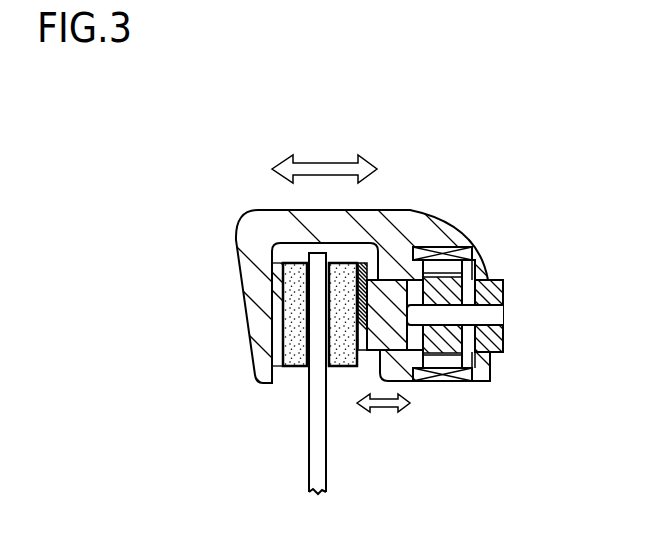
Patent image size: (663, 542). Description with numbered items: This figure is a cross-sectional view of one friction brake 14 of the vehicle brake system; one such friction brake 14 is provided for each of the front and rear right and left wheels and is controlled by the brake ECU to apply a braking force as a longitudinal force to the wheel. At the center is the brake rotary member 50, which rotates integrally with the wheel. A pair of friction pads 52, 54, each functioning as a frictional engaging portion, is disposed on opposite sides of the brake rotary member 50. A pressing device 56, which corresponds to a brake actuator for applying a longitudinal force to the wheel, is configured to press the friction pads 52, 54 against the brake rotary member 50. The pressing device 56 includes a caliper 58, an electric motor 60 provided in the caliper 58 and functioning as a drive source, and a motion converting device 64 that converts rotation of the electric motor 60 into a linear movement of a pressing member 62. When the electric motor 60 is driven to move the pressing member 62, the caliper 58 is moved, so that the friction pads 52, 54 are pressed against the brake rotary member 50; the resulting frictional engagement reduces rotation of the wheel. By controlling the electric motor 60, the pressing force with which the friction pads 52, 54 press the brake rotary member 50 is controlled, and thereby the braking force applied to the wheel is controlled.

The friction brake 14 is at (442, 190).
The brake rotary member 50 is at (315, 467).
The friction pad 52 is at (338, 380).
The friction pad 54 is at (287, 373).
The pressing device 56 is at (483, 250).
The caliper 58 is at (258, 228).
The electric motor 60 is at (450, 387).
The pressing member 62 is at (395, 278).
The motion converting device 64 is at (467, 335).